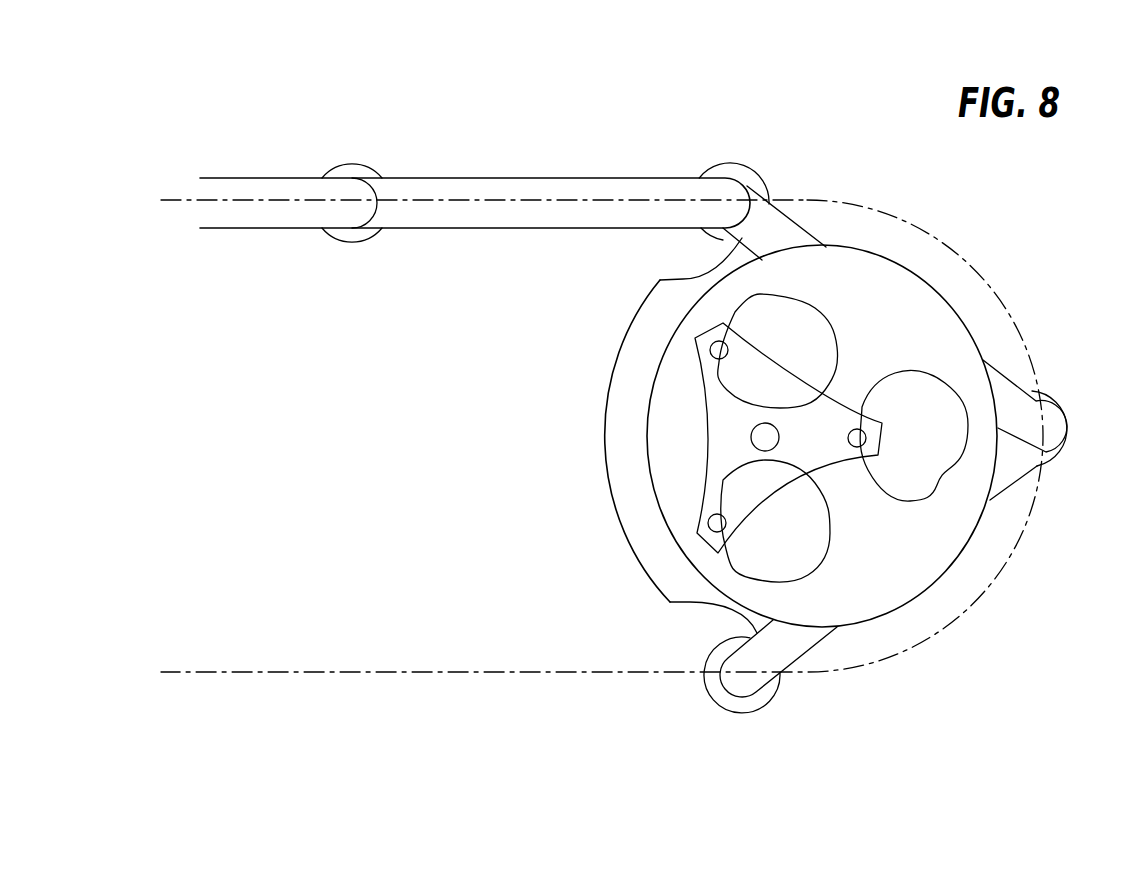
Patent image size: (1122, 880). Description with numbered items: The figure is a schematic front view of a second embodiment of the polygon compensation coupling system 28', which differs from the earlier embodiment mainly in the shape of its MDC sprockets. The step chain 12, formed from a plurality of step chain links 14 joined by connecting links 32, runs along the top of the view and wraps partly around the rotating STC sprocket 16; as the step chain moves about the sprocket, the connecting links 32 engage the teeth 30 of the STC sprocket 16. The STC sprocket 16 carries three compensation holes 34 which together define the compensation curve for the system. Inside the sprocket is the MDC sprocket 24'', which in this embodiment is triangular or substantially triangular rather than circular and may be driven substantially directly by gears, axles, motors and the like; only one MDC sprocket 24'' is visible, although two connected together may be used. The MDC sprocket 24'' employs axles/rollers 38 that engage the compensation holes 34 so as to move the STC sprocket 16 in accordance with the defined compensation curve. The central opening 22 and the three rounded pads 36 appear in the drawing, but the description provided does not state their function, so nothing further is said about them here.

The retrieval device assembly 28' is at (384, 241).
The catheter tube 12 is at (211, 170).
The wire 14 is at (272, 218).
The loop path of tube 16 is at (897, 285).
The guide rings 32 is at (337, 159).
The support arms 30 is at (683, 278).
The carrier body 24'' is at (754, 436).
The mounting plate 34 is at (815, 347).
The fastener holes 38 is at (712, 350).
The central opening 22 is at (750, 438).
The retaining pads 36 is at (760, 293).